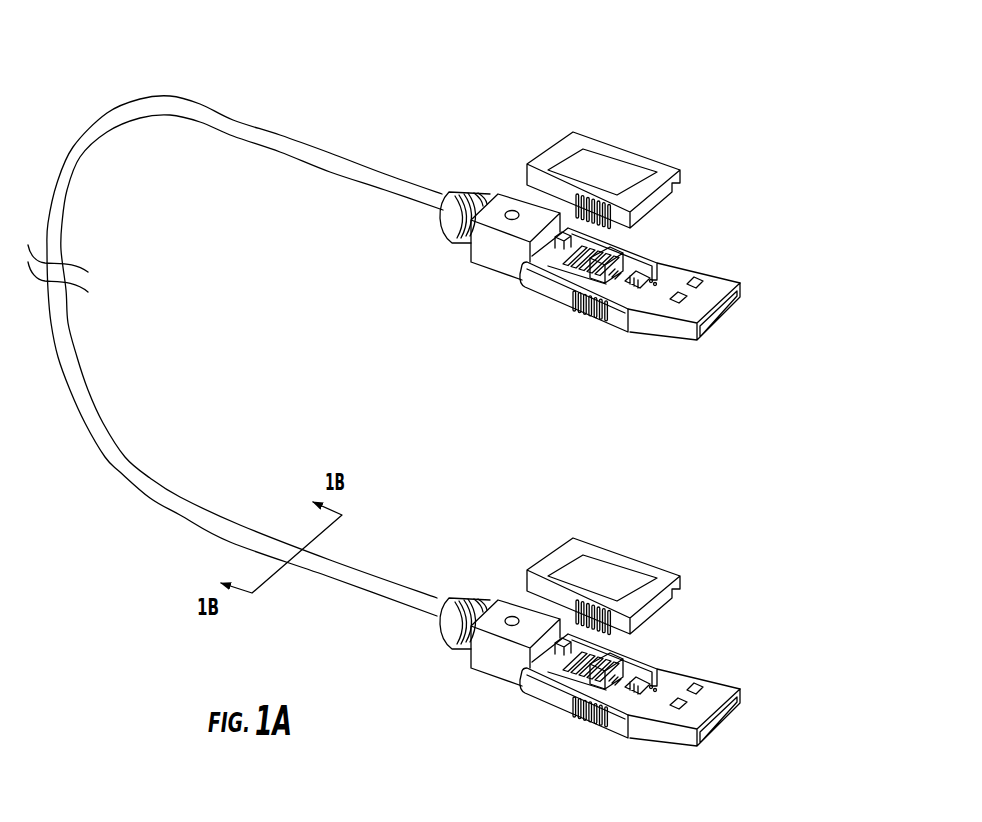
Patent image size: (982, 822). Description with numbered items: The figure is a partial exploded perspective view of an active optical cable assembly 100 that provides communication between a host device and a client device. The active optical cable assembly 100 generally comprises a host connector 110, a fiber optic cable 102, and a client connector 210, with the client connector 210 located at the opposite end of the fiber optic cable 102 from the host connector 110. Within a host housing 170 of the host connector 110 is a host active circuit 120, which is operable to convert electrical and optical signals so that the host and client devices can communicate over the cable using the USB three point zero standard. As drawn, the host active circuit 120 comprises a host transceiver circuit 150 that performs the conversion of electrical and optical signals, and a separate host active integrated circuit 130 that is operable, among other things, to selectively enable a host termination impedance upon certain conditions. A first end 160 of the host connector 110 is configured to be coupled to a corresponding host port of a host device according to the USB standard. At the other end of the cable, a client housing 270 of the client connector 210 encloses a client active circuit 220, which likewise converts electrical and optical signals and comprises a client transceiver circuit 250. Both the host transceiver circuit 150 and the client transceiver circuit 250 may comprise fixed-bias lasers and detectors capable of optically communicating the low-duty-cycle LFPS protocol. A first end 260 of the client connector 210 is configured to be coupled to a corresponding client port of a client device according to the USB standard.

The active optical cable assembly 100 is at (88, 92).
The fiber optic cable 102 is at (354, 160).
The host connector 110 is at (645, 139).
The host active circuit 120 is at (649, 241).
The host active integrated circuit 130 is at (658, 263).
The host transceiver circuit 150 is at (577, 246).
The first end 160 is at (722, 281).
The host housing 170 is at (543, 150).
The client connector 210 is at (588, 578).
The client active circuit 220 is at (640, 632).
The client transceiver circuit 250 is at (601, 686).
The first end 260 is at (708, 700).
The client housing 270 is at (581, 578).